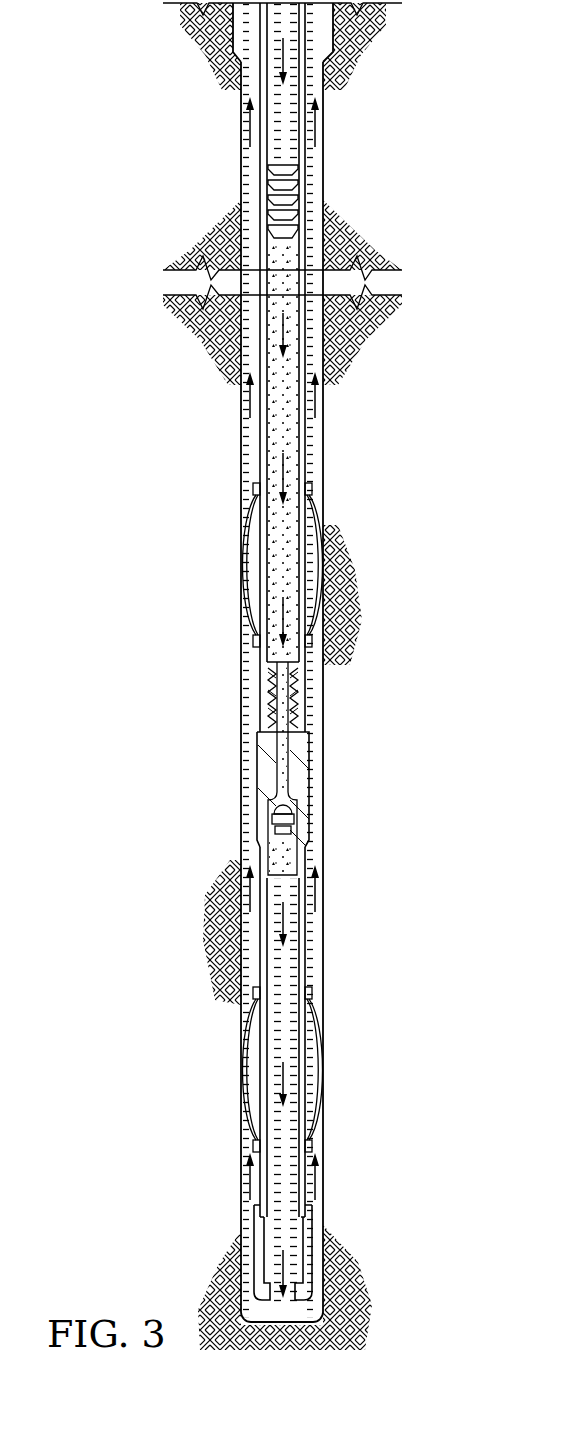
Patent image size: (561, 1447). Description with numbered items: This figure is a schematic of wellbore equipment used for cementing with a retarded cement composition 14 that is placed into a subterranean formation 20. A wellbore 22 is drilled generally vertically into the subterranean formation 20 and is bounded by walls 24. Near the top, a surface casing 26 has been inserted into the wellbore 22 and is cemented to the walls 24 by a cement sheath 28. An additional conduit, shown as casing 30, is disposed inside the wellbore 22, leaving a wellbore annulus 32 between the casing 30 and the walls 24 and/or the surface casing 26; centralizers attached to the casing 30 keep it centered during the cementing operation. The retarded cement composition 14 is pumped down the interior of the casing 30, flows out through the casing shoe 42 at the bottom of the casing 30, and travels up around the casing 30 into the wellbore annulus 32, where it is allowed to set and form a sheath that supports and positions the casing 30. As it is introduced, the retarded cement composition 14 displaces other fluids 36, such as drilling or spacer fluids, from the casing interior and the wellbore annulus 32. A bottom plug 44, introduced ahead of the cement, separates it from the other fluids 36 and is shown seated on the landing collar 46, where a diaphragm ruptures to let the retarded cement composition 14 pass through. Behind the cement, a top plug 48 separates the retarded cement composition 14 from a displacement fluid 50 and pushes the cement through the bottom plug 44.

The retarded cement composition 14 is at (282, 330).
The subterranean formation 20 is at (172, 605).
The wellbore 22 is at (325, 455).
The walls 24 is at (312, 158).
The surface casing 26 is at (232, 58).
The cement sheath 28 is at (334, 52).
The casing 30 is at (307, 338).
The wellbore annulus 32 is at (250, 452).
The other fluids 36 is at (283, 918).
The casing shoe 42 is at (313, 1250).
The bottom plug 44 is at (298, 715).
The landing collar 46 is at (265, 755).
The top plug 48 is at (275, 205).
The displacement fluid 50 is at (282, 58).